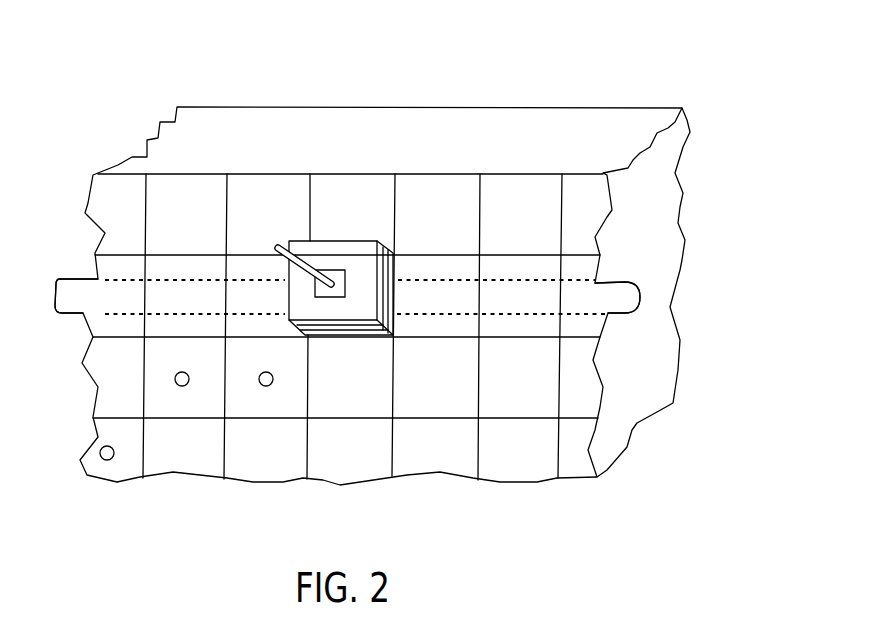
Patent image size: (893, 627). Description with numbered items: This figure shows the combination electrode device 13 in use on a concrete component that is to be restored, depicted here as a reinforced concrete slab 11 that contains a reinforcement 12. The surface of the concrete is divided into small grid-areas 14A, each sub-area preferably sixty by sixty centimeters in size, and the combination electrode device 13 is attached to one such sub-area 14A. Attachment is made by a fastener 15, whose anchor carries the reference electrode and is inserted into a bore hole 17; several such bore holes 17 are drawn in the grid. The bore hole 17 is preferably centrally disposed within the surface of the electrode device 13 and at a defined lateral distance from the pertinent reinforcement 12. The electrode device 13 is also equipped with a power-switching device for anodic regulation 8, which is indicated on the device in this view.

The reinforced concrete slab 11 is at (185, 143).
The reinforcement 12 is at (74, 293).
The power-switching device for anodic regulation 8 is at (343, 275).
The combination electrode device 13 is at (362, 287).
The fastener 15 is at (290, 255).
The bore hole 17 is at (262, 394).
The grid-areas 14A is at (463, 325).